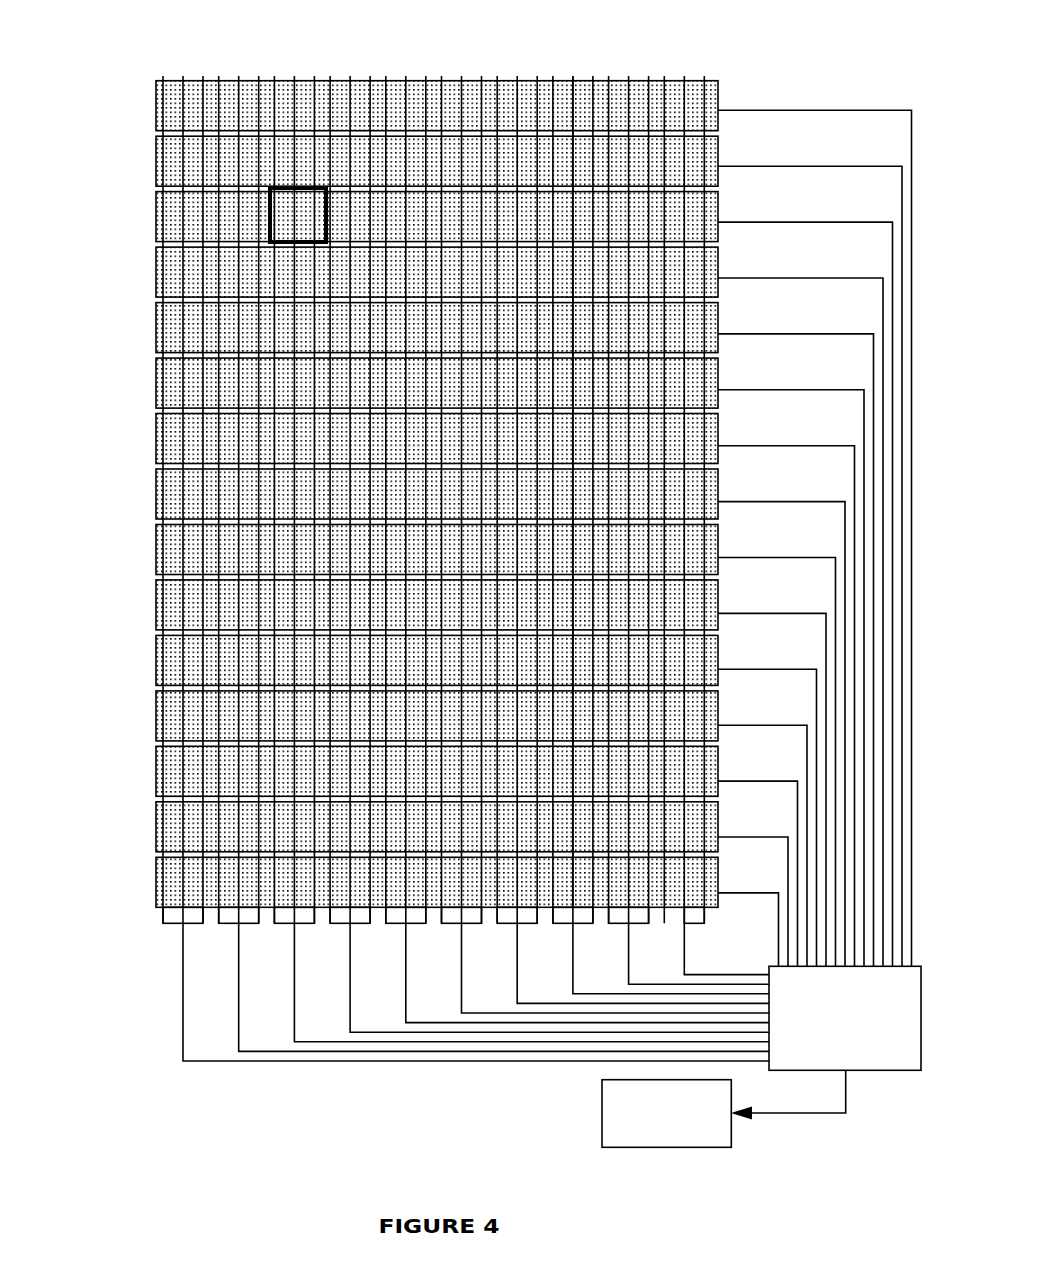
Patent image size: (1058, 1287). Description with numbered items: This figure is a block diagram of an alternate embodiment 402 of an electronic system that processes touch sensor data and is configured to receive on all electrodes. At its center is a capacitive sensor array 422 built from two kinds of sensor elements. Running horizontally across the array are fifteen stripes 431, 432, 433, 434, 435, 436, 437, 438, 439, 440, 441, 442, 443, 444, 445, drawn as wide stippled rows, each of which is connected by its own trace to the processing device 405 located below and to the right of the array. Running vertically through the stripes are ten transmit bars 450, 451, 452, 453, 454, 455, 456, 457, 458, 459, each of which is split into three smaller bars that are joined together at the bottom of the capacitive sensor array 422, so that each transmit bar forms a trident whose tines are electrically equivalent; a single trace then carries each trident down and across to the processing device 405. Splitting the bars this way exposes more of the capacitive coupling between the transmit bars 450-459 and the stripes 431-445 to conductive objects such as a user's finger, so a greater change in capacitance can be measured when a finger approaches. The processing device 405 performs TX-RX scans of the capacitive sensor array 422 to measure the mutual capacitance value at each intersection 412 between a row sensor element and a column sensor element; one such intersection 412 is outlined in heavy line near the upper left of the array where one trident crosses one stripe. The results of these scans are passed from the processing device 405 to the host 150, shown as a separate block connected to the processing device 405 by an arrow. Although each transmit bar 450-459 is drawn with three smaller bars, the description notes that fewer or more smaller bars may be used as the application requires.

The alternate embodiment 402 is at (67, 30).
The capacitive sensor array 422 is at (566, 68).
The intersection 412 is at (262, 185).
The processing device 405 is at (820, 1041).
The host 150 is at (676, 1129).
The stripe 431 is at (467, 911).
The stripe 432 is at (472, 884).
The stripe 433 is at (477, 856).
The stripe 434 is at (481, 828).
The stripe 435 is at (486, 800).
The stripe 436 is at (491, 773).
The stripe 437 is at (496, 746).
The stripe 438 is at (500, 717).
The stripe 439 is at (505, 690).
The stripe 440 is at (510, 662).
The stripe 441 is at (515, 635).
The stripe 442 is at (519, 606).
The stripe 443 is at (524, 579).
The stripe 444 is at (529, 551).
The stripe 445 is at (534, 524).
The transmit bar 450 is at (716, 525).
The transmit bar 451 is at (689, 530).
The transmit bar 452 is at (661, 535).
The transmit bar 453 is at (633, 539).
The transmit bar 454 is at (606, 544).
The transmit bar 455 is at (577, 549).
The transmit bar 456 is at (549, 554).
The transmit bar 457 is at (521, 559).
The transmit bar 458 is at (494, 563).
The transmit bar 459 is at (466, 568).